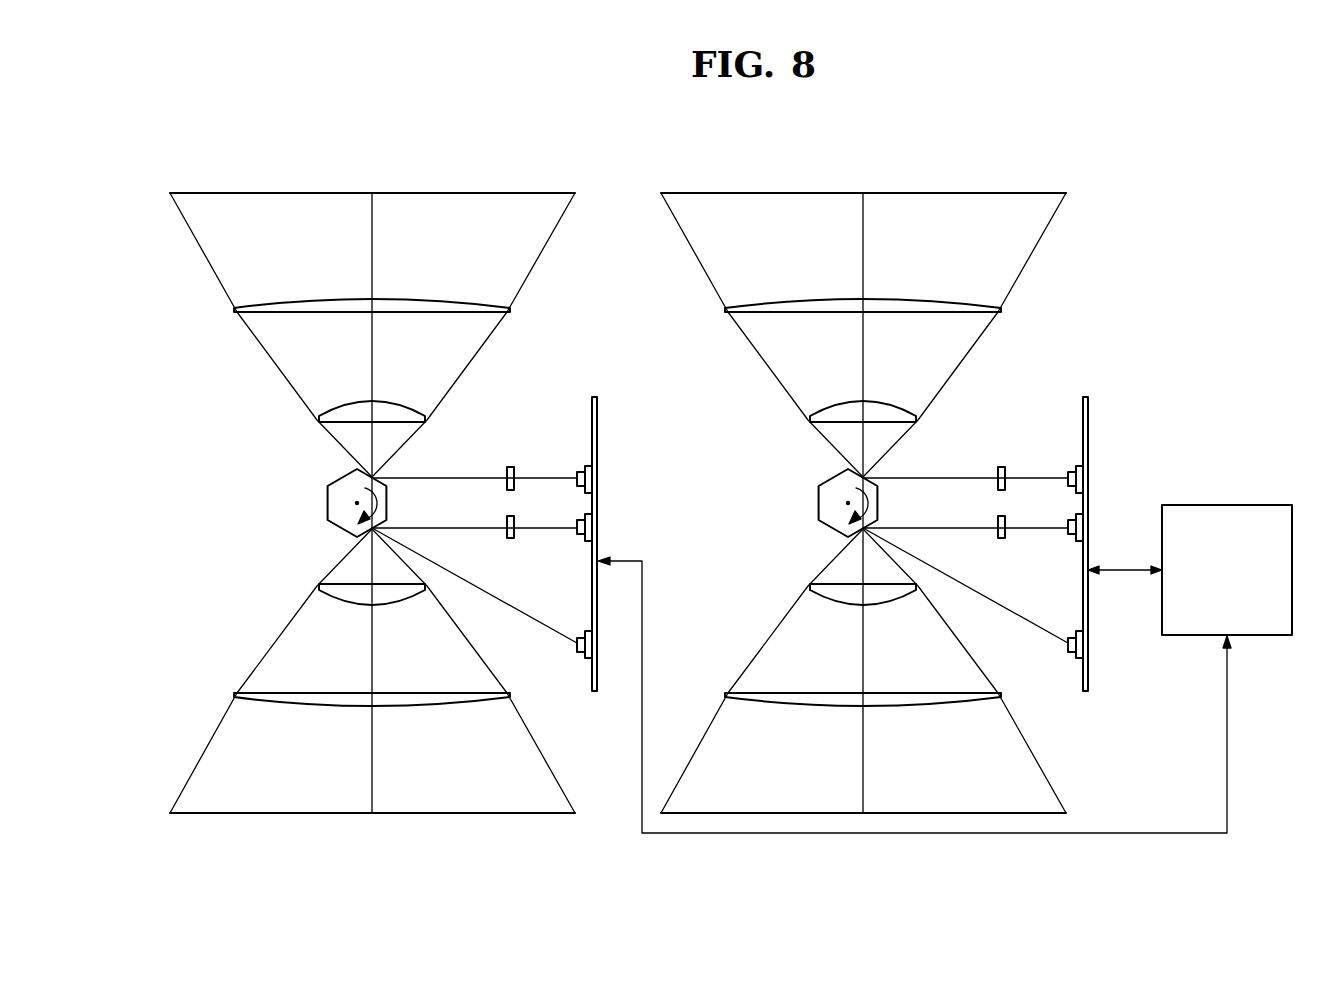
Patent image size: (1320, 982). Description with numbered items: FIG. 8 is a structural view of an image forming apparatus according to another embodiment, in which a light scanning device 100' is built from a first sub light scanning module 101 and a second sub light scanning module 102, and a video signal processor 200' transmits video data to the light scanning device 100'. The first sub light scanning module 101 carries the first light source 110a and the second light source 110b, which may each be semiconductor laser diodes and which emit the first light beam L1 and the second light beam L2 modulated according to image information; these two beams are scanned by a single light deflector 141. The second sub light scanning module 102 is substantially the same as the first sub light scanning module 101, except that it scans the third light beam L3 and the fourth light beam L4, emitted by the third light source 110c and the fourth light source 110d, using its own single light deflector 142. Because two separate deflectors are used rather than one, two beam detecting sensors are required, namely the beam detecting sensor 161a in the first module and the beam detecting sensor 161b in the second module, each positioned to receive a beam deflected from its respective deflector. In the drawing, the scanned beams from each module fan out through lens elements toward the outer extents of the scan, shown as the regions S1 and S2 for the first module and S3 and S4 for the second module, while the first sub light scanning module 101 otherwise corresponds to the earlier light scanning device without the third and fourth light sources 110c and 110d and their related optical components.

The light scanning device 100' is at (914, 471).
The first sub light scanning module 101 is at (1040, 178).
The second sub light scanning module 102 is at (556, 178).
The first light source 110a is at (1069, 541).
The second light source 110b is at (1069, 470).
The third light source 110c is at (578, 541).
The fourth light source 110d is at (578, 470).
The light deflector 141 is at (835, 477).
The light deflector 142 is at (344, 477).
The beam detecting sensor 161a is at (1071, 657).
The beam detecting sensor 161b is at (580, 657).
The video signal processor 200' is at (1190, 538).
The first light beam L1 is at (771, 637).
The second light beam L2 is at (701, 262).
The third light beam L3 is at (280, 637).
The fourth light beam L4 is at (210, 262).
The first scan region S1 is at (974, 813).
The second scan region S2 is at (919, 193).
The third scan region S3 is at (283, 813).
The fourth scan region S4 is at (283, 193).